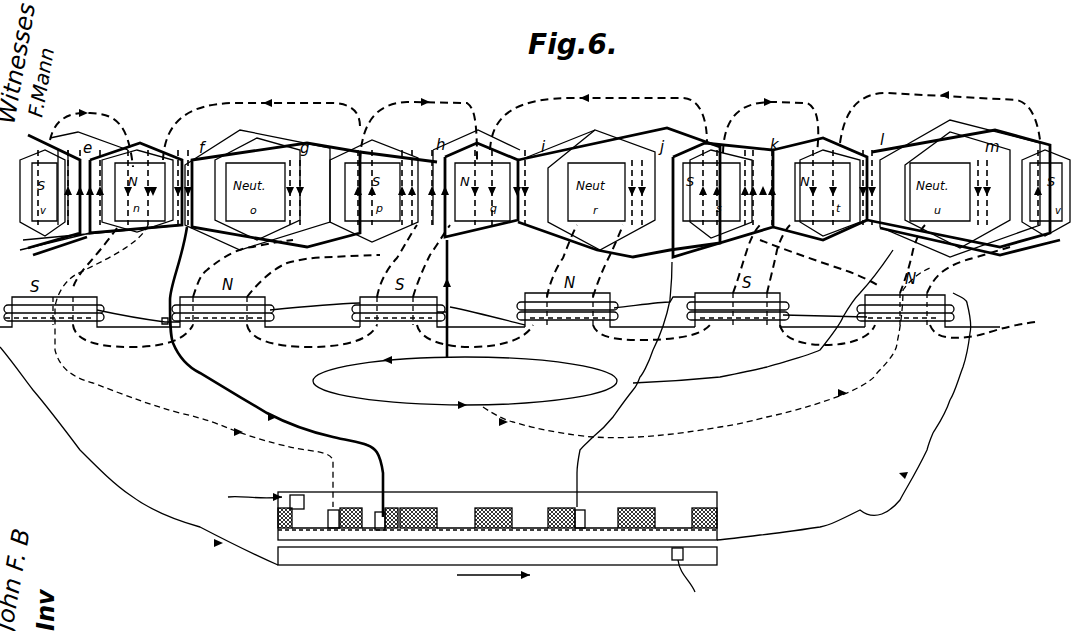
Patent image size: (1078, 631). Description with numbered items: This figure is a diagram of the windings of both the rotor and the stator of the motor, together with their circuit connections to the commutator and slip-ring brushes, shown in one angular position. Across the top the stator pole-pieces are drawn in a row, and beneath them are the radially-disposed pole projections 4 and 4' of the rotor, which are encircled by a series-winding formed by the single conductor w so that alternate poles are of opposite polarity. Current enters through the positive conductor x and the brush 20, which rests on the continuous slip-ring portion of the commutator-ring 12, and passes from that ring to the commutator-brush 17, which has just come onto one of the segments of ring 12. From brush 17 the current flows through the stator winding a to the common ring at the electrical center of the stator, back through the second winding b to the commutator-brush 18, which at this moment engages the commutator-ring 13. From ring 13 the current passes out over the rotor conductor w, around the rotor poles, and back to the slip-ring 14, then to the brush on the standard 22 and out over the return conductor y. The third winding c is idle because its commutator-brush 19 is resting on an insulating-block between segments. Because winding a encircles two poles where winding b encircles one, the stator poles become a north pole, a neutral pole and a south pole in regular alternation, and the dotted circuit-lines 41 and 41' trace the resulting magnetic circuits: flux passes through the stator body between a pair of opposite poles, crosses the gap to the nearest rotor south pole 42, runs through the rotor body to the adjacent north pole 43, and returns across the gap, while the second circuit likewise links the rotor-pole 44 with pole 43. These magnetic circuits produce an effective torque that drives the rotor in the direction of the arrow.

The pole projection 4 is at (407, 286).
The pole projection 4' is at (446, 286).
The commutator-ring 12 is at (455, 495).
The commutator-ring 13 is at (385, 541).
The slip-ring 14 is at (613, 558).
The commutator-brush 17 is at (337, 510).
The commutator-brush 18 is at (383, 530).
The commutator-brush 19 is at (583, 512).
The brush 20 is at (292, 494).
The standard 22 is at (675, 558).
The magnetic circuit 41 is at (300, 84).
The magnetic circuit 41' is at (486, 90).
The south pole of rotor 42 is at (97, 300).
The north pole of rotor 43 is at (268, 300).
The rotor-pole 44 is at (360, 292).
The stator winding a is at (440, 389).
The stator winding b is at (345, 420).
The stator winding c is at (587, 447).
The rotor conductor w is at (947, 405).
The positive conductor x is at (254, 488).
The negative conductor y is at (694, 582).